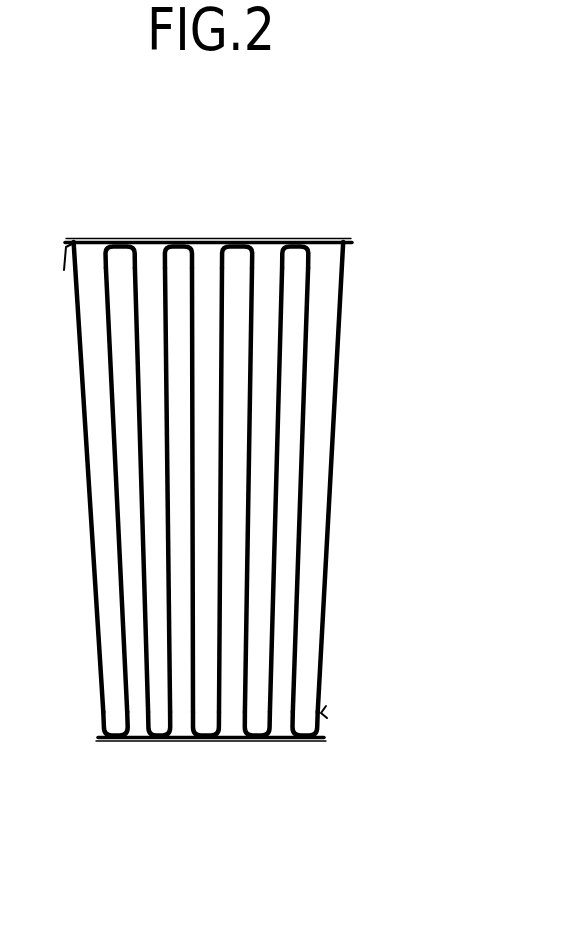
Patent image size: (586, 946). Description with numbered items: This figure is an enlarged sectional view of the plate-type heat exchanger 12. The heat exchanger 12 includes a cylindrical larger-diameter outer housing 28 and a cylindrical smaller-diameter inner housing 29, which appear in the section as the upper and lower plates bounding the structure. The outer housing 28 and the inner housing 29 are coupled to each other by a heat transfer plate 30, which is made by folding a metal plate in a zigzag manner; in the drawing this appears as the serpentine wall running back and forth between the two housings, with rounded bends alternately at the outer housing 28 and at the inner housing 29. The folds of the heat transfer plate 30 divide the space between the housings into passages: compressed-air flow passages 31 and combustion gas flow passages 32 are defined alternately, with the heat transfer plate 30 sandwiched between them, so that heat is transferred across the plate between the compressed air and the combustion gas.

The plate-type heat exchanger 12 is at (315, 229).
The outer housing 28 is at (207, 242).
The inner housing 29 is at (181, 722).
The heat transfer plate 30 is at (333, 448).
The compressed-air flow passages 31 is at (136, 722).
The combustion gas flow passages 32 is at (148, 258).